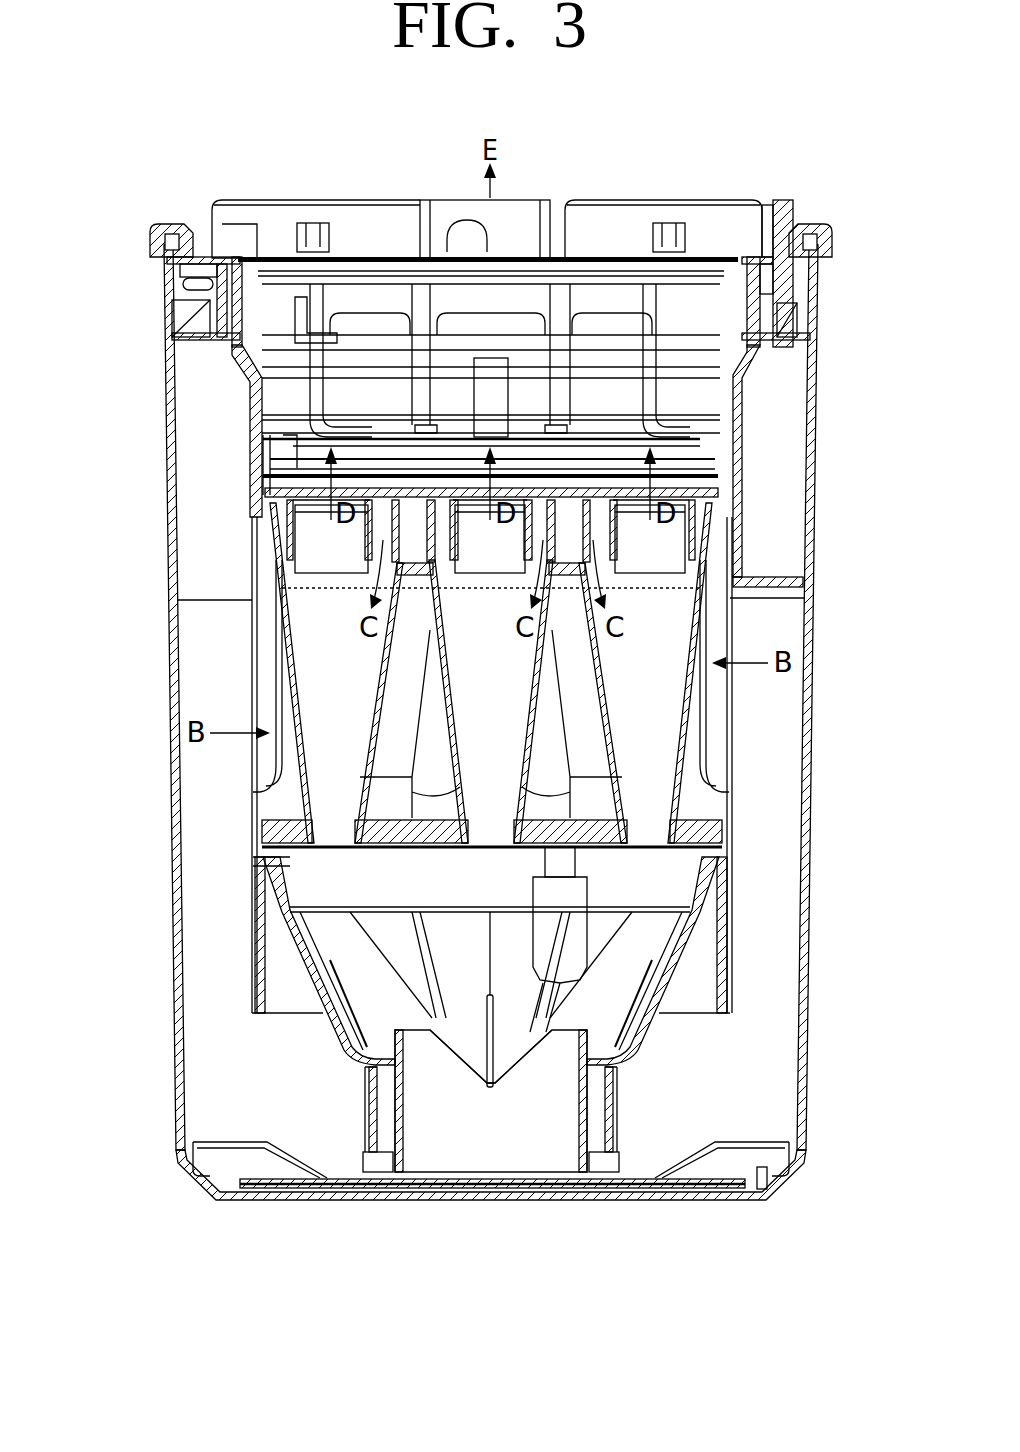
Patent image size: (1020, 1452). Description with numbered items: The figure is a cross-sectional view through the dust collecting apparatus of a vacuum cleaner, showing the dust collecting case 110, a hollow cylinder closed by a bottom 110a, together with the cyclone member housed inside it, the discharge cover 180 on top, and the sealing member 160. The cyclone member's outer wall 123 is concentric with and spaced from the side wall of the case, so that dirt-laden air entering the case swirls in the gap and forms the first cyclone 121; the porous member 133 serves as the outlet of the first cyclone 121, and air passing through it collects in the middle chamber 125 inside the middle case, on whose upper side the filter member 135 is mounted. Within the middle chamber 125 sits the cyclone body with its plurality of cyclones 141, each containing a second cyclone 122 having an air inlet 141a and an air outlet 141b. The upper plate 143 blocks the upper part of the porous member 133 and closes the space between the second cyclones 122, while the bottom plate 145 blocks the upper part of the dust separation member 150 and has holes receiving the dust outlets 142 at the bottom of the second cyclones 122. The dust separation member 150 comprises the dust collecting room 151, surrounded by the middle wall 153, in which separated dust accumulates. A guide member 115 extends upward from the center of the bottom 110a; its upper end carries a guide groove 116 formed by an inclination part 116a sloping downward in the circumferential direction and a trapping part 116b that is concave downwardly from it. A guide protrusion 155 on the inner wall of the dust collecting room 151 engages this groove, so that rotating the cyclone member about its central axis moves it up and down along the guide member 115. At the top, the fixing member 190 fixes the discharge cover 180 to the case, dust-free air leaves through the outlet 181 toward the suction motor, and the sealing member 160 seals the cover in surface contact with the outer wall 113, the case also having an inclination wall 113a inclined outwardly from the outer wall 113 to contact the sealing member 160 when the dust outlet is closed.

The dust collecting case 110 is at (820, 1050).
The bottom 110a is at (703, 1172).
The outer wall 113 is at (170, 440).
The inclination wall 113a is at (195, 287).
The guide member 115 is at (368, 1122).
The guide groove 116 is at (435, 1280).
The inclination part 116a is at (455, 1065).
The trapping part 116b is at (492, 1090).
The first cyclone 121 is at (766, 838).
The second cyclones 122 is at (255, 640).
The outer wall 123 is at (95, 866).
The middle chamber 125 is at (590, 724).
The porous member 133 is at (270, 690).
The filter member 135 is at (292, 393).
The cyclones 141 is at (728, 628).
The air inlet 141a is at (310, 540).
The air outlet 141b is at (300, 572).
The dust outlets 142 is at (288, 860).
The upper plate 143 is at (775, 508).
The bottom plate 145 is at (712, 863).
The dust separation member 150 is at (700, 960).
The dust collecting room 151 is at (384, 982).
The middle wall 153 is at (262, 878).
The guide protrusion 155 is at (500, 1035).
The sealing member 160 is at (205, 340).
The discharge cover 180 is at (778, 248).
The outlet 181 is at (690, 250).
The fixing member 190 is at (530, 200).